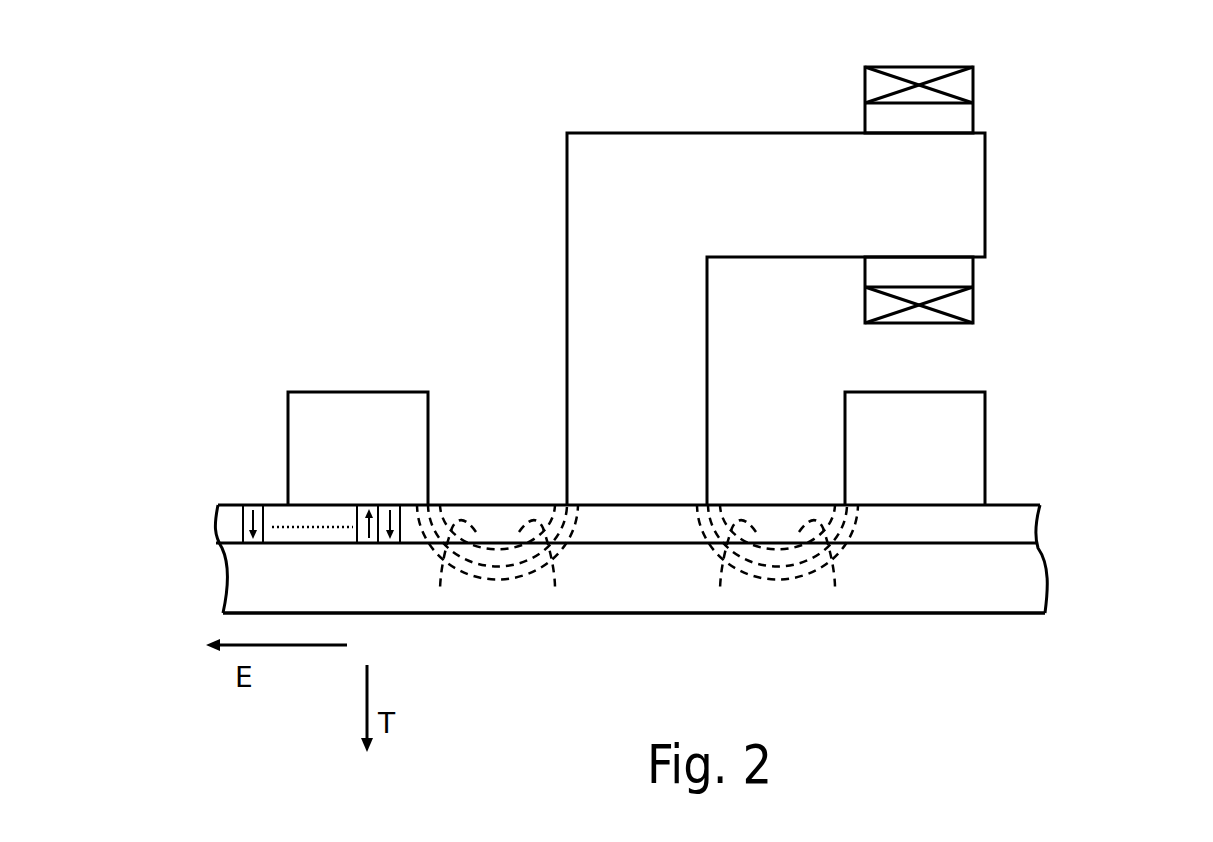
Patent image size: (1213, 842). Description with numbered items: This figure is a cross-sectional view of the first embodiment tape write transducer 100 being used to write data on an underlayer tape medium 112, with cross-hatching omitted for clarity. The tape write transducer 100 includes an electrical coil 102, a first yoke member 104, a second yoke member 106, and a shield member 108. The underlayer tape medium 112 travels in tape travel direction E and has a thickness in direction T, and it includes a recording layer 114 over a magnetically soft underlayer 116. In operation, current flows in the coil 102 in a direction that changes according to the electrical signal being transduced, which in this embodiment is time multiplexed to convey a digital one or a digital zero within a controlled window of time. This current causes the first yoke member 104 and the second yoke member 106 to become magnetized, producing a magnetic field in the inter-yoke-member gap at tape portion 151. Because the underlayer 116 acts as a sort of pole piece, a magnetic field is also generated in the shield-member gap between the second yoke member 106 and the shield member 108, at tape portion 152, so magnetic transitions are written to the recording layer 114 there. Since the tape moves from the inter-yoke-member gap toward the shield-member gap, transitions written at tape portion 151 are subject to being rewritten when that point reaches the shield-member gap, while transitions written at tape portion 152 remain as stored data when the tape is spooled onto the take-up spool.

The tape write transducer 100 is at (433, 268).
The electrical coil 102 is at (973, 88).
The first yoke member 104 is at (937, 491).
The second yoke member 106 is at (787, 223).
The shield member 108 is at (385, 498).
The underlayer tape medium 112 is at (713, 535).
The recording layer 114 is at (1025, 503).
The magnetically soft underlayer 116 is at (1038, 601).
The tape portion 151 is at (826, 584).
The tape portion 152 is at (548, 584).